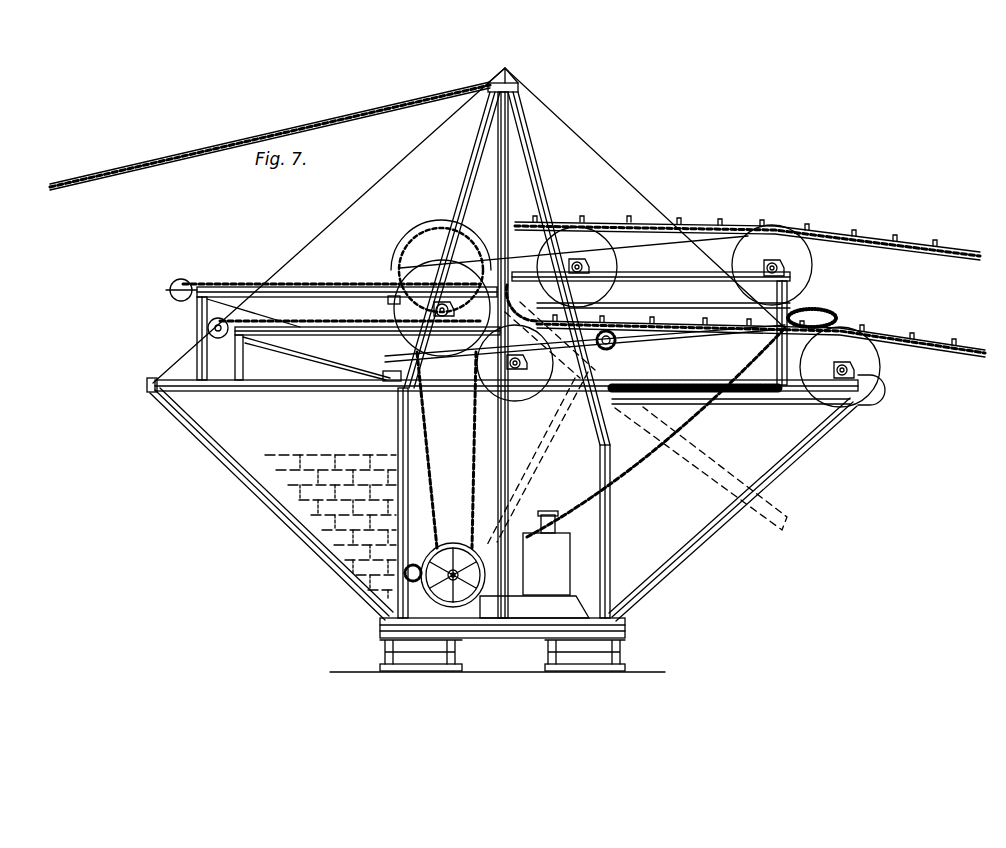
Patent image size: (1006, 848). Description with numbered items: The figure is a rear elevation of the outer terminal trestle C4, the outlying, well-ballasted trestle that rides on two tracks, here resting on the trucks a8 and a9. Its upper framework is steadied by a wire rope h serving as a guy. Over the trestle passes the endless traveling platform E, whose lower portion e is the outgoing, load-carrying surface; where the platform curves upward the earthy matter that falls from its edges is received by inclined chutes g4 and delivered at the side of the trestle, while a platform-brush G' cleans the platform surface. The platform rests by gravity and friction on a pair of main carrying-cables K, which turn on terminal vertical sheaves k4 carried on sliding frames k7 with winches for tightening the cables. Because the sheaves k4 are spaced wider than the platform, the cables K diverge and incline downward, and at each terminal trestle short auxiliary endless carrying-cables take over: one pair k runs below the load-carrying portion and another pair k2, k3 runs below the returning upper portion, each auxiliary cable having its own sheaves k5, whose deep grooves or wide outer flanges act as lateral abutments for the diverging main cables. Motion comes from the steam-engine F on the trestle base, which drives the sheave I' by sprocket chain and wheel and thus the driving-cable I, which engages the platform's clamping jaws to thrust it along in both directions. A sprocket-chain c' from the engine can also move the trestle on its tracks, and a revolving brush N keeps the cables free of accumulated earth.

The wire rope guy h is at (270, 136).
The sheave I' is at (441, 256).
The driving-cable I is at (680, 222).
The sliding frame k7 is at (390, 299).
The terminal vertical sheave k4 is at (480, 300).
The auxiliary endless carrying-cable k3 is at (547, 314).
The main carrying-cable K is at (920, 338).
The auxiliary endless carrying-cable k2 is at (692, 282).
The auxiliary cable sheave k5 is at (806, 316).
The endless traveling platform E is at (745, 286).
The platform-brush G' is at (819, 307).
The lower portion of the platform e is at (872, 333).
The revolving brush N is at (612, 348).
The auxiliary endless carrying-cable k is at (705, 396).
The inclined chute g4 is at (768, 505).
The sprocket-chain c' is at (418, 590).
The steam-engine F is at (453, 579).
The outer terminal trestle C4 is at (502, 641).
The truck a9 is at (421, 667).
The truck a8 is at (585, 668).